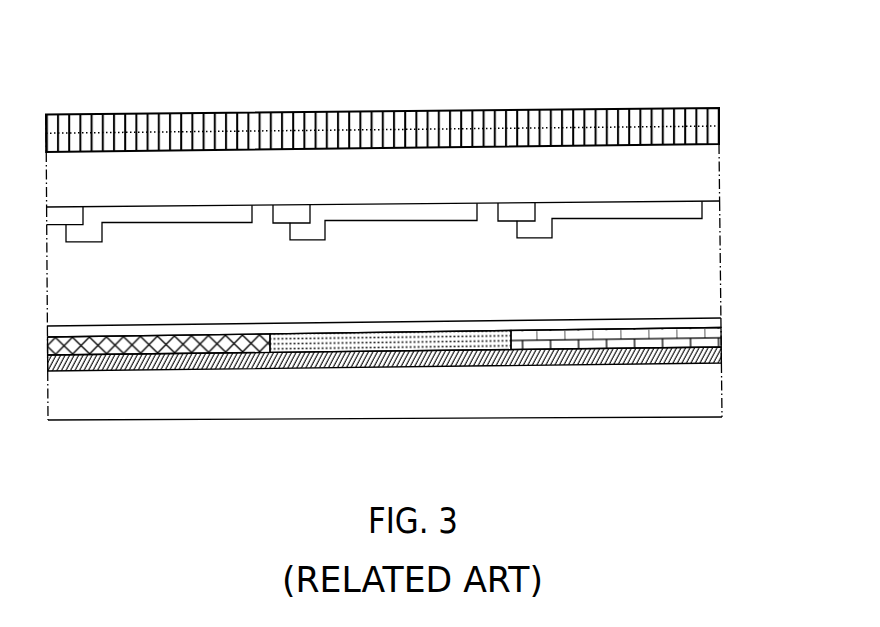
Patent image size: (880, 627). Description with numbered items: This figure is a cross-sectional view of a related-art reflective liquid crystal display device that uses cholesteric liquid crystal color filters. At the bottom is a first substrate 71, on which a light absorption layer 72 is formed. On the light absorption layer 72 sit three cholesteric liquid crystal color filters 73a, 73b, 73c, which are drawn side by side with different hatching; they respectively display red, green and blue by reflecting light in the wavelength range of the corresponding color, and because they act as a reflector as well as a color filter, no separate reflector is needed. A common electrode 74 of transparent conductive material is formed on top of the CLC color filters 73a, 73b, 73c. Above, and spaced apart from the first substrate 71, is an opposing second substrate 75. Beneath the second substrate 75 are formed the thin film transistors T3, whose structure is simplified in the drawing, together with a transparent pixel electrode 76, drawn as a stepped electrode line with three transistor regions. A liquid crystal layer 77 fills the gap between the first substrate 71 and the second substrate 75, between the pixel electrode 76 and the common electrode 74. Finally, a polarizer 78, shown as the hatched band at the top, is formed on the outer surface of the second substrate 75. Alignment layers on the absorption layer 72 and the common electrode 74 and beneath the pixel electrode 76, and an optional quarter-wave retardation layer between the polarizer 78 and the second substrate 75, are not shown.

The first substrate 71 is at (711, 398).
The light absorption layer 72 is at (717, 360).
The CLC color filter 73a is at (128, 335).
The CLC color filter 73b is at (403, 334).
The CLC color filter 73c is at (637, 330).
The common electrode 74 is at (714, 328).
The second substrate 75 is at (707, 167).
The transparent pixel electrode 76 is at (187, 221).
The liquid crystal layer 77 is at (706, 259).
The polarizer 78 is at (719, 128).
The thin film transistor T3 is at (67, 215).